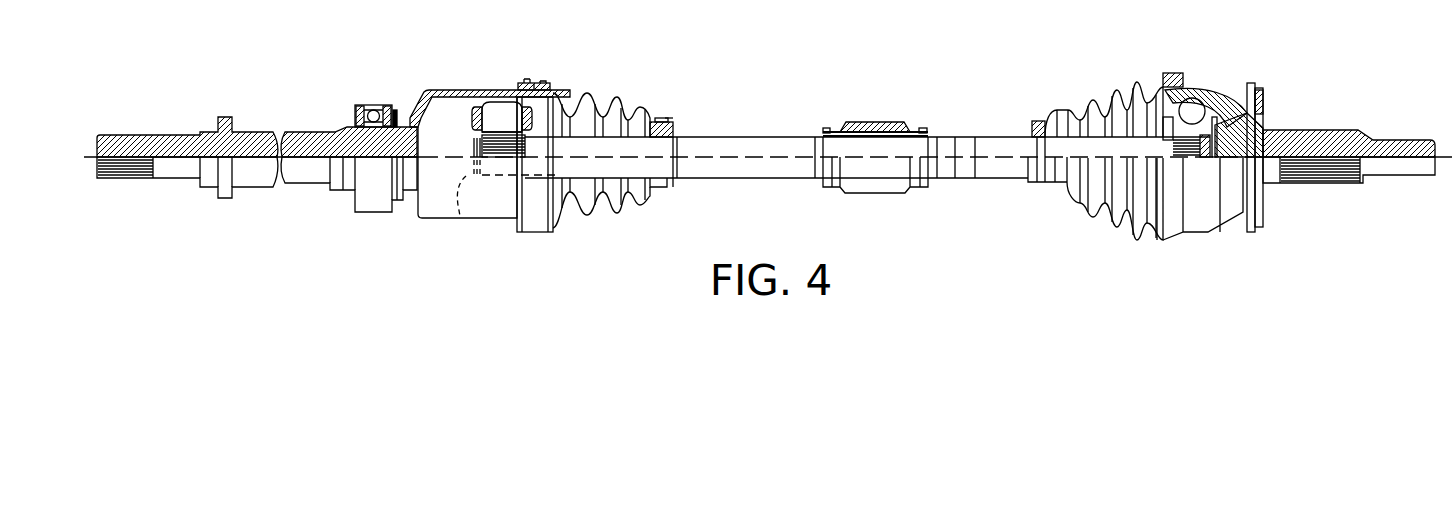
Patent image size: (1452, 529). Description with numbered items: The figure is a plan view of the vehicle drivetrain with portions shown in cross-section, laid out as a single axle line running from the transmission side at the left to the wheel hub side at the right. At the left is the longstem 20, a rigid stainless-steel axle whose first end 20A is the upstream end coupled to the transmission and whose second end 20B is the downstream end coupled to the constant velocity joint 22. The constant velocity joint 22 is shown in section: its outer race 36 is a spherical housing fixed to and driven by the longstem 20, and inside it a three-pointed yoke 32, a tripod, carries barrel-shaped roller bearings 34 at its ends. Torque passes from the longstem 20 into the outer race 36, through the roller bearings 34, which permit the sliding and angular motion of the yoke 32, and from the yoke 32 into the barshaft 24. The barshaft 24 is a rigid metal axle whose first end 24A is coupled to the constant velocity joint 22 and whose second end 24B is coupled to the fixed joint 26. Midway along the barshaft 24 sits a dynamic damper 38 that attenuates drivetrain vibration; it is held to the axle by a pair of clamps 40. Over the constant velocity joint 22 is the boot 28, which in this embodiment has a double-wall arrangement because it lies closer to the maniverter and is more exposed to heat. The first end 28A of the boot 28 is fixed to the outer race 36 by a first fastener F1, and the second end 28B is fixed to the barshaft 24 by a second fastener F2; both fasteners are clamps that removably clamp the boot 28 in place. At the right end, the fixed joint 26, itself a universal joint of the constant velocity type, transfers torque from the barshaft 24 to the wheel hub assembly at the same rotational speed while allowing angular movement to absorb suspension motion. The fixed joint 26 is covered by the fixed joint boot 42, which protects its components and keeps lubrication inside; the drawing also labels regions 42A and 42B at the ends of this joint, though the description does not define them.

The longstem 20 is at (305, 126).
The first end of the longstem 20A is at (88, 170).
The second end of the longstem 20B is at (462, 220).
The constant velocity joint 22 is at (468, 82).
The barshaft 24 is at (762, 100).
The first end of the barshaft 24A is at (665, 185).
The second end of the barshaft 24B is at (1037, 185).
The fixed joint 26 is at (1126, 70).
The boot 28 is at (619, 97).
The first end of the boot 28A is at (533, 245).
The second end of the boot 28B is at (676, 201).
The yoke 32 is at (504, 88).
The roller bearings 34 is at (470, 115).
The outer race 36 is at (450, 88).
The dynamic damper 38 is at (884, 121).
The clamps 40 is at (834, 188).
The fixed joint boot 42 is at (1158, 203).
The boot clamp end of outer joint 42A is at (1060, 110).
The stub shaft of outer joint 42B is at (1327, 183).
The first fastener F1 is at (534, 84).
The second fastener F2 is at (669, 118).